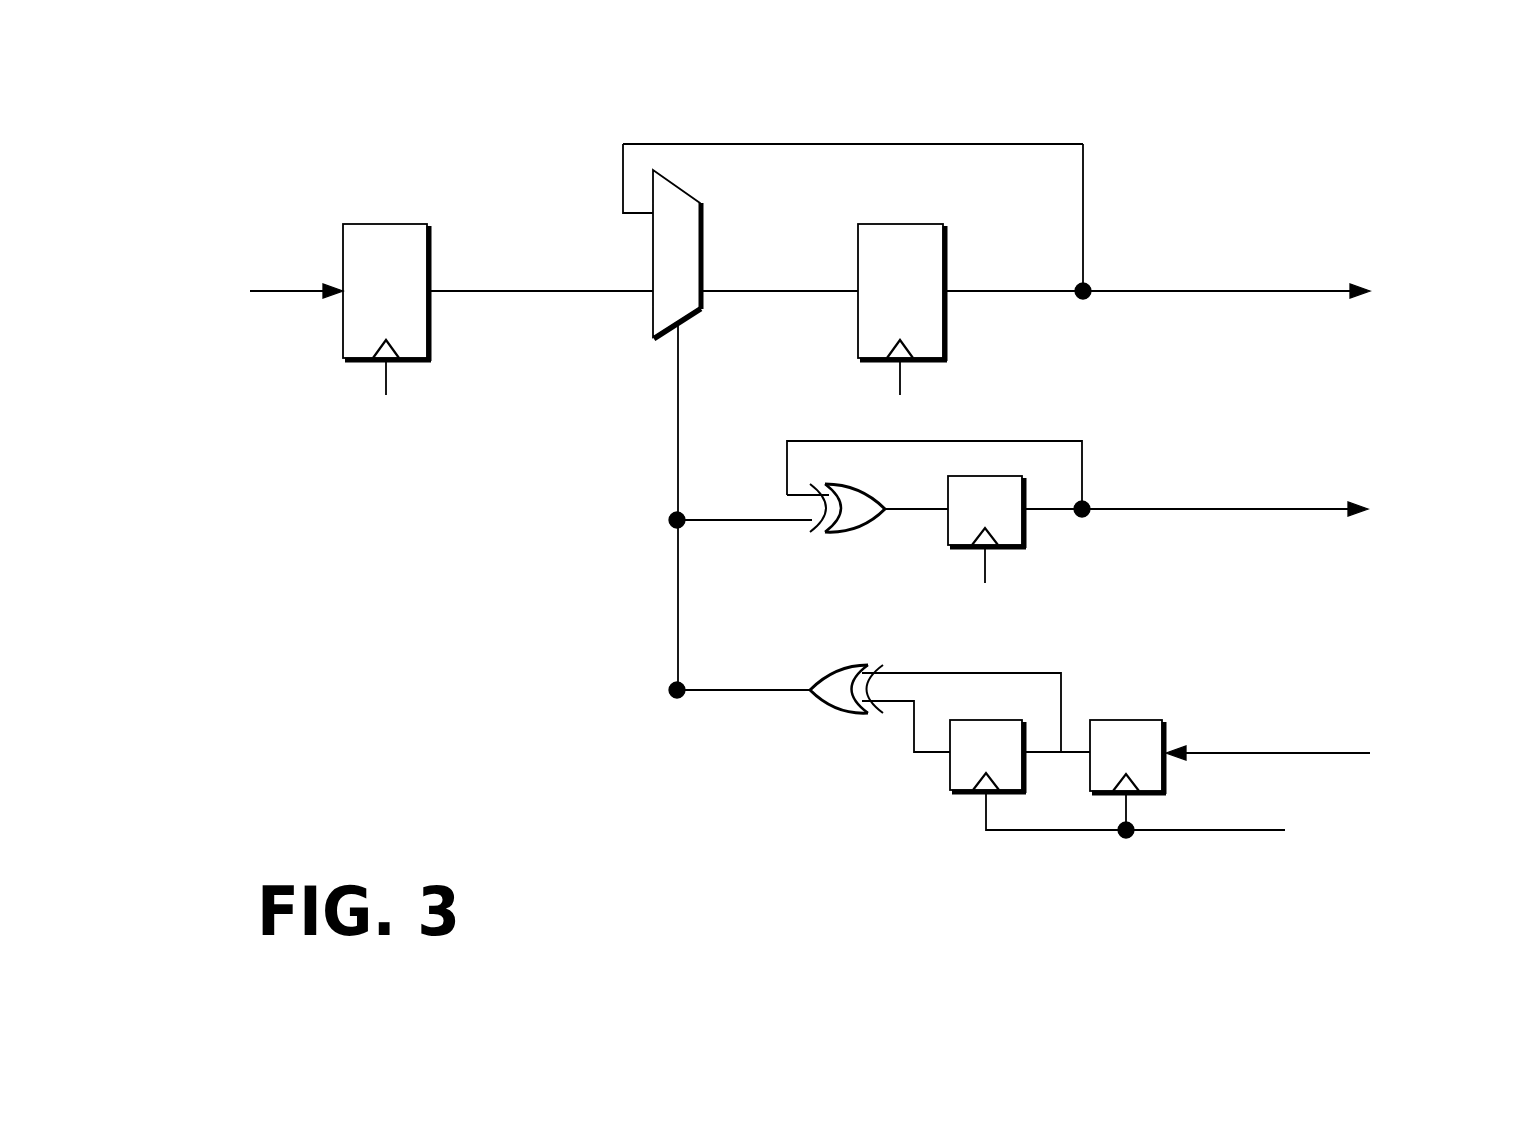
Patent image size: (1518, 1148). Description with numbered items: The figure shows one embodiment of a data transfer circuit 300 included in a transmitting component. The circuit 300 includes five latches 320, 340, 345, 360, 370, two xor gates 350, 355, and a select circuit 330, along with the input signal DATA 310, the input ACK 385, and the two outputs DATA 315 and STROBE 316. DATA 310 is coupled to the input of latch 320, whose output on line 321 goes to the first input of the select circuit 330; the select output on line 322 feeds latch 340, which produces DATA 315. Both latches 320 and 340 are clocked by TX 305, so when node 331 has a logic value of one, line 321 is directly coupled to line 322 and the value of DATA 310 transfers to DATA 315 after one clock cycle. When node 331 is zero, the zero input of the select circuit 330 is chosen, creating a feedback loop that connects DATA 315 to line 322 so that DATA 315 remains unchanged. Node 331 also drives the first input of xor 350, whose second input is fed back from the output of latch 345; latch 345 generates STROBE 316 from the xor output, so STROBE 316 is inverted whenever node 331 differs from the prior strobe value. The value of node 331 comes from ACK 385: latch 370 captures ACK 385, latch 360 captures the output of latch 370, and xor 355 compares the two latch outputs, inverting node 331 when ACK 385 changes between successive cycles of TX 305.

The circuit 300 is at (1257, 193).
The TX 305 is at (838, 601).
The DATA 310 is at (245, 291).
The DATA 315 is at (1213, 224).
The STROBE 316 is at (1267, 509).
The latch 320 is at (431, 322).
The line 321 is at (542, 278).
The line 322 is at (780, 276).
The select circuit 330 is at (693, 312).
The node 331 is at (740, 509).
The latch 340 is at (947, 325).
The latch 345 is at (1026, 537).
The xor 350 is at (866, 533).
The xor 355 is at (823, 704).
The latch 360 is at (964, 793).
The latch 370 is at (1112, 719).
The ACK 385 is at (1314, 751).